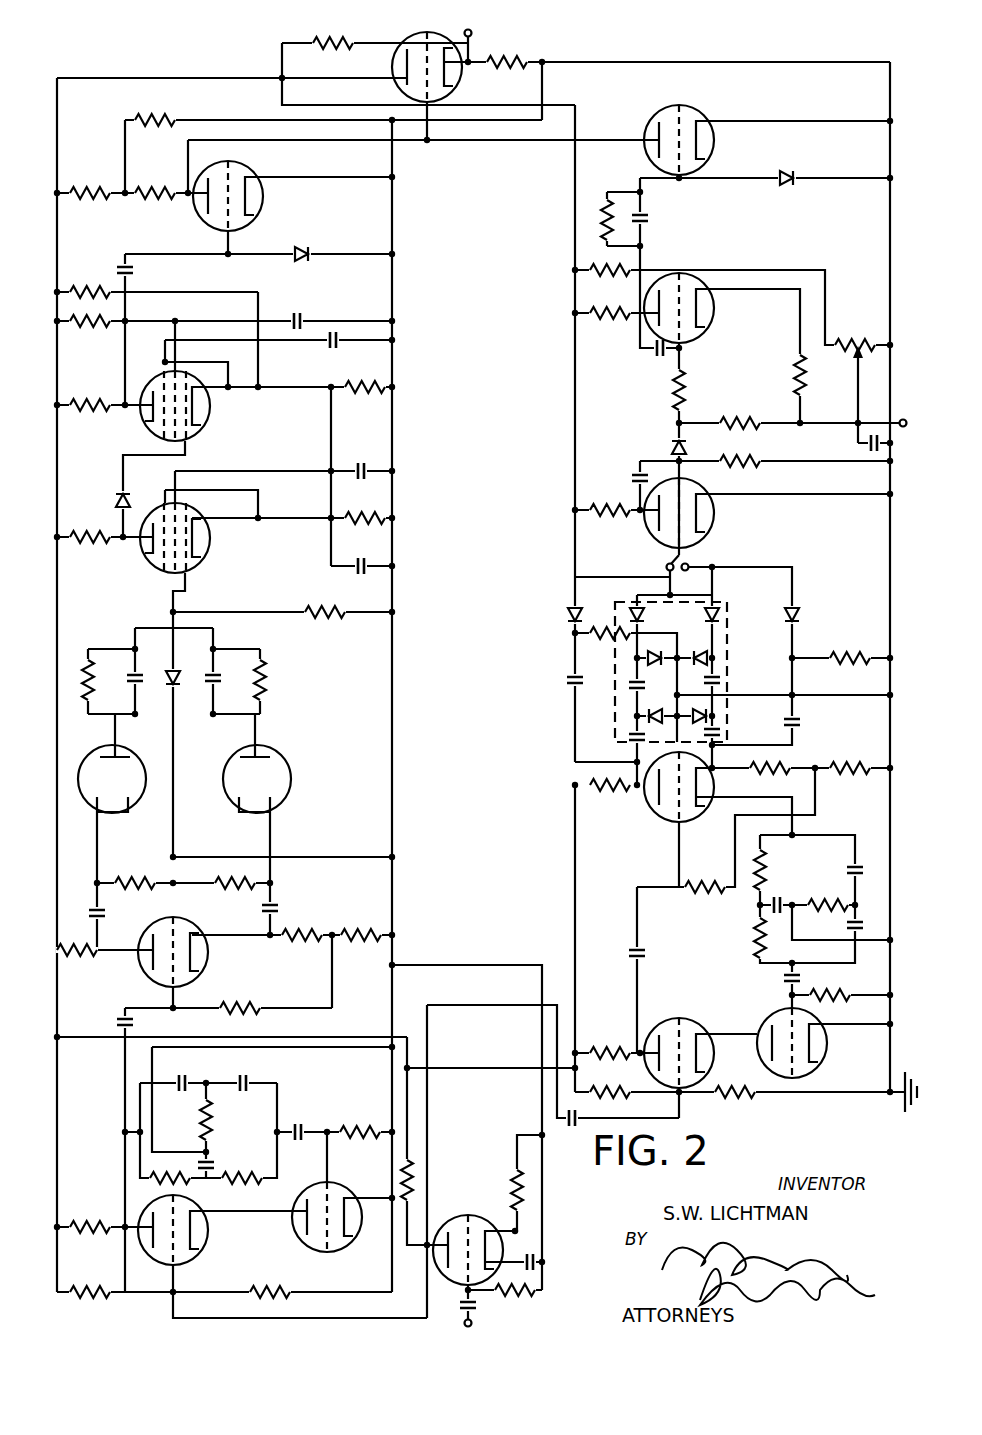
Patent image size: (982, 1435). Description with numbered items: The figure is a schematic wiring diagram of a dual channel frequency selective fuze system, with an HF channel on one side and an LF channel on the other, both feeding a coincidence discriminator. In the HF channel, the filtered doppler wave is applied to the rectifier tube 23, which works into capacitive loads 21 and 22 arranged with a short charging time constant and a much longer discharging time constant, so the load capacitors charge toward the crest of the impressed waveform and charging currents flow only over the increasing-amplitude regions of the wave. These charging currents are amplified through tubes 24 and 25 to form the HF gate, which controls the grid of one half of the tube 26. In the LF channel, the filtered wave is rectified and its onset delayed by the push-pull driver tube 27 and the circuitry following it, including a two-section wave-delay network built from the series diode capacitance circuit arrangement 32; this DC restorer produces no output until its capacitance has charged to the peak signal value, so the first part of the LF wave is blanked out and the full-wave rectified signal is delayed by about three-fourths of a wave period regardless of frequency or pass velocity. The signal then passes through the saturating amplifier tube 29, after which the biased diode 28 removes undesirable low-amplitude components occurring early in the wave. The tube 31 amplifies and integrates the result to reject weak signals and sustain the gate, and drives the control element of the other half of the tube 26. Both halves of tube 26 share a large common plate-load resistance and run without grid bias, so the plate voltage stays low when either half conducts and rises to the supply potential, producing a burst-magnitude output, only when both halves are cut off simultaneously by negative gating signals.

The capacitive load 21 is at (211, 665).
The capacitive load 22 is at (143, 664).
The rectifier tube 23 is at (86, 766).
The amplifier tube 24 is at (152, 562).
The amplifier tube 25 is at (150, 381).
The coincidence discriminator tube 26 is at (196, 201).
The push-pull driver tube 27 is at (647, 797).
The biased diode 28 is at (667, 448).
The saturating amplifier tube 29 is at (650, 528).
The amplifier and integrator tube 31 is at (712, 300).
The series diode capacitance circuit arrangement 32 is at (727, 683).